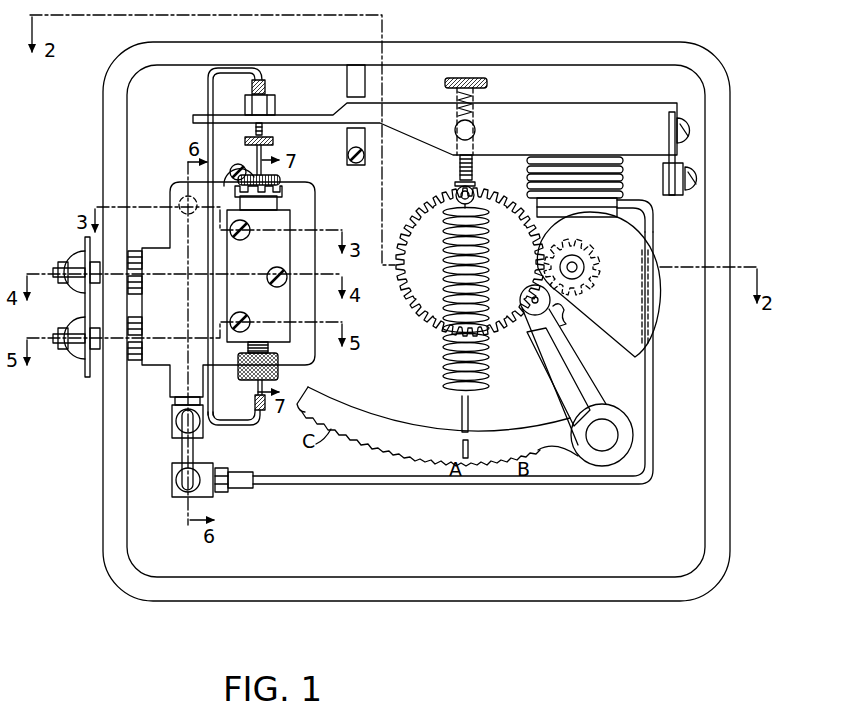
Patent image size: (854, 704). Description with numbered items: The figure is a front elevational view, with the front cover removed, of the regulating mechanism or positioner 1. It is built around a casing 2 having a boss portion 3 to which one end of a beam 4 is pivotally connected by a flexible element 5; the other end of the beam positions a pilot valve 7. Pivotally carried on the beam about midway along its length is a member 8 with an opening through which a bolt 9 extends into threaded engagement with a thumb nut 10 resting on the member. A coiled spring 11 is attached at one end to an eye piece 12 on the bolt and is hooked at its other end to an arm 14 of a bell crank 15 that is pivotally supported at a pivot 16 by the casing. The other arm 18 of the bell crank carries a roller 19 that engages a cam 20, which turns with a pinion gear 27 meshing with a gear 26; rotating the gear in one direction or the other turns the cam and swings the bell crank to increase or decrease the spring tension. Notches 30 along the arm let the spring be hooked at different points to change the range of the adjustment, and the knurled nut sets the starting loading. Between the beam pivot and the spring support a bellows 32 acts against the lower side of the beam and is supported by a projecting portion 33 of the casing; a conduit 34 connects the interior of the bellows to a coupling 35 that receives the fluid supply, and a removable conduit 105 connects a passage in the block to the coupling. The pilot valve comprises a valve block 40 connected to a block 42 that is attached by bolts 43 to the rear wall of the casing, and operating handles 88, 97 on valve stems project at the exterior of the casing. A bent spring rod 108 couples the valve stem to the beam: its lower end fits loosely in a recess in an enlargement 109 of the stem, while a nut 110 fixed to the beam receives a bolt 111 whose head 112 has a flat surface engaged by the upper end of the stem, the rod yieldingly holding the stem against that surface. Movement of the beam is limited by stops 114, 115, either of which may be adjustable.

The regulating mechanism 1 is at (408, 539).
The casing 2 is at (483, 601).
The boss portion 3 is at (680, 198).
The beam 4 is at (555, 103).
The flexible element 5 is at (668, 165).
The pilot valve 7 is at (264, 259).
The member 8 is at (476, 134).
The bolt 9 is at (458, 165).
The thumb nut 10 is at (488, 83).
The coiled spring 11 is at (445, 352).
The eye piece 12 is at (454, 186).
The arm 14 is at (378, 411).
The bell crank 15 is at (570, 455).
The pivot 16 is at (602, 435).
The arm 18 is at (543, 388).
The roller 19 is at (563, 320).
The cam 20 is at (661, 310).
The gear 26 is at (422, 320).
The pinion gear 27 is at (585, 278).
The notches 30 is at (365, 445).
The bellows 32 is at (527, 173).
The projecting portion 33 is at (646, 222).
The conduit 34 is at (533, 487).
The coupling 35 is at (175, 497).
The valve block 40 is at (296, 333).
The block 42 is at (317, 206).
The bolts 43 is at (243, 161).
The operating handle 88 is at (75, 360).
The operating handle 97 is at (67, 258).
The conduit 105 is at (182, 450).
The spring rod 108 is at (207, 98).
The enlargement 109 is at (262, 411).
The nut 110 is at (276, 109).
The bolt 111 is at (268, 85).
The head 112 is at (274, 142).
The stop 114 is at (347, 85).
The stop 115 is at (347, 140).